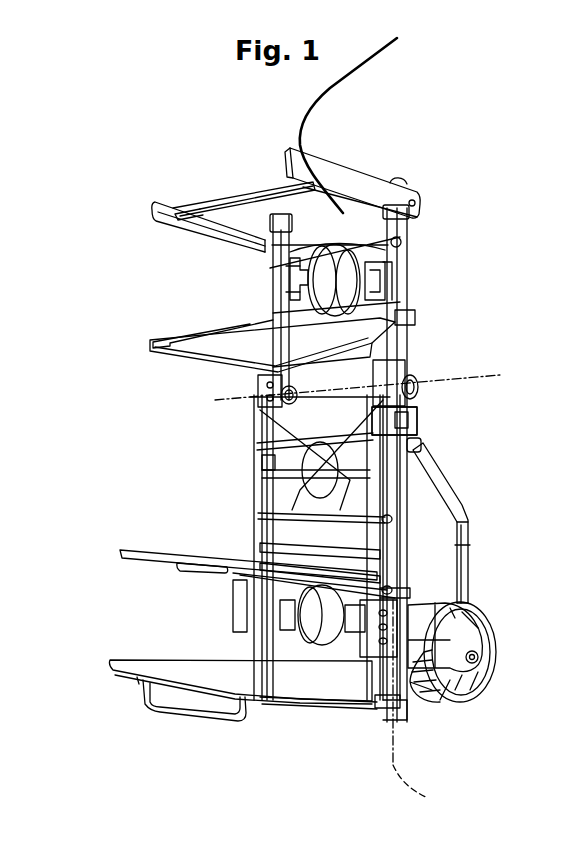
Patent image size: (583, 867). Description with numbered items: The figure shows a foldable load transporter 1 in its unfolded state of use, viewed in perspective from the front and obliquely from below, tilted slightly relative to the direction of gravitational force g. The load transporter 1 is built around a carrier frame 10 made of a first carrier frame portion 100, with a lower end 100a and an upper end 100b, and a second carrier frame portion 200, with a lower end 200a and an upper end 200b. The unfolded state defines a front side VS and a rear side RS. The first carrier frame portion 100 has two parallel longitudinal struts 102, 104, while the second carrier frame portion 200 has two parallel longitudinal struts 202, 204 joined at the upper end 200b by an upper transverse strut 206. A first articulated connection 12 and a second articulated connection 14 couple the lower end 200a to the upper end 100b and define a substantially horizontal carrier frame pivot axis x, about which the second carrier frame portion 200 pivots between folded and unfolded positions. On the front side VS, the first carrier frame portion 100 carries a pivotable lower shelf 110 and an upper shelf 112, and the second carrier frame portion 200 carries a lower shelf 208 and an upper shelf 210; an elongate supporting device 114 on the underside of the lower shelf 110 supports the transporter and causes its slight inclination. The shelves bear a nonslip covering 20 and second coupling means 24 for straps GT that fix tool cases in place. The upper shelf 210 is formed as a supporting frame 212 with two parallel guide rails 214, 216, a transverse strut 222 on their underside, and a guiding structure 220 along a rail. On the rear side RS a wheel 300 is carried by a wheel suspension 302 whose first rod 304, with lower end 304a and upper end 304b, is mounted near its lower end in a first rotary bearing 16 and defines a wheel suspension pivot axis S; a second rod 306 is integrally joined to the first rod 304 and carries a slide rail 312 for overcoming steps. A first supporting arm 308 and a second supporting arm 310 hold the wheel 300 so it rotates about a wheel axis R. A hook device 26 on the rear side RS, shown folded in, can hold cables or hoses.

The load transporter 1 is at (472, 156).
The carrier frame 10 is at (420, 258).
The first articulated connection 12 is at (296, 397).
The second articulated connection 14 is at (415, 382).
The first rotary bearing 16 is at (412, 592).
The nonslip covering 20 is at (200, 655).
The second coupling means 24 is at (206, 318).
The hook device 26 is at (402, 318).
The first carrier frame portion 100 is at (280, 547).
The lower end of the first carrier frame portion 100a is at (382, 705).
The upper end of the first carrier frame portion 100b is at (405, 398).
The first longitudinal strut 102 is at (255, 528).
The second longitudinal strut 104 is at (253, 517).
The lower shelf 110 is at (293, 704).
The upper shelf 112 is at (113, 578).
The supporting device 114 is at (243, 723).
The second carrier frame portion 200 is at (325, 288).
The lower end of the second carrier frame portion 200a is at (258, 380).
The upper end of the second carrier frame portion 200b is at (400, 177).
The first longitudinal strut 202 is at (273, 297).
The second longitudinal strut 204 is at (400, 293).
The upper transverse strut 206 is at (364, 112).
The lower shelf 208 is at (236, 340).
The upper shelf 210 is at (196, 175).
The supporting frame 212 is at (357, 151).
The guide rail 214 is at (330, 162).
The guide rail 216 is at (153, 205).
The guiding structure 220 is at (177, 197).
The transverse strut 222 is at (247, 200).
The wheel 300 is at (489, 641).
The wheel suspension 302 is at (465, 575).
The first rod 304 is at (470, 529).
The lower end of the first rod 304a is at (402, 703).
The upper end of the first rod 304b is at (420, 443).
The second rod 306 is at (467, 513).
The first supporting arm 308 is at (487, 680).
The second supporting arm 310 is at (453, 630).
The slide rail 312 is at (470, 544).
The front side VS is at (122, 295).
The rear side RS is at (470, 296).
The strap GT is at (250, 460).
The carrier frame pivot axis x is at (497, 372).
The wheel suspension pivot axis S is at (419, 708).
The wheel axis R is at (487, 650).
The direction of gravitational force g is at (85, 428).